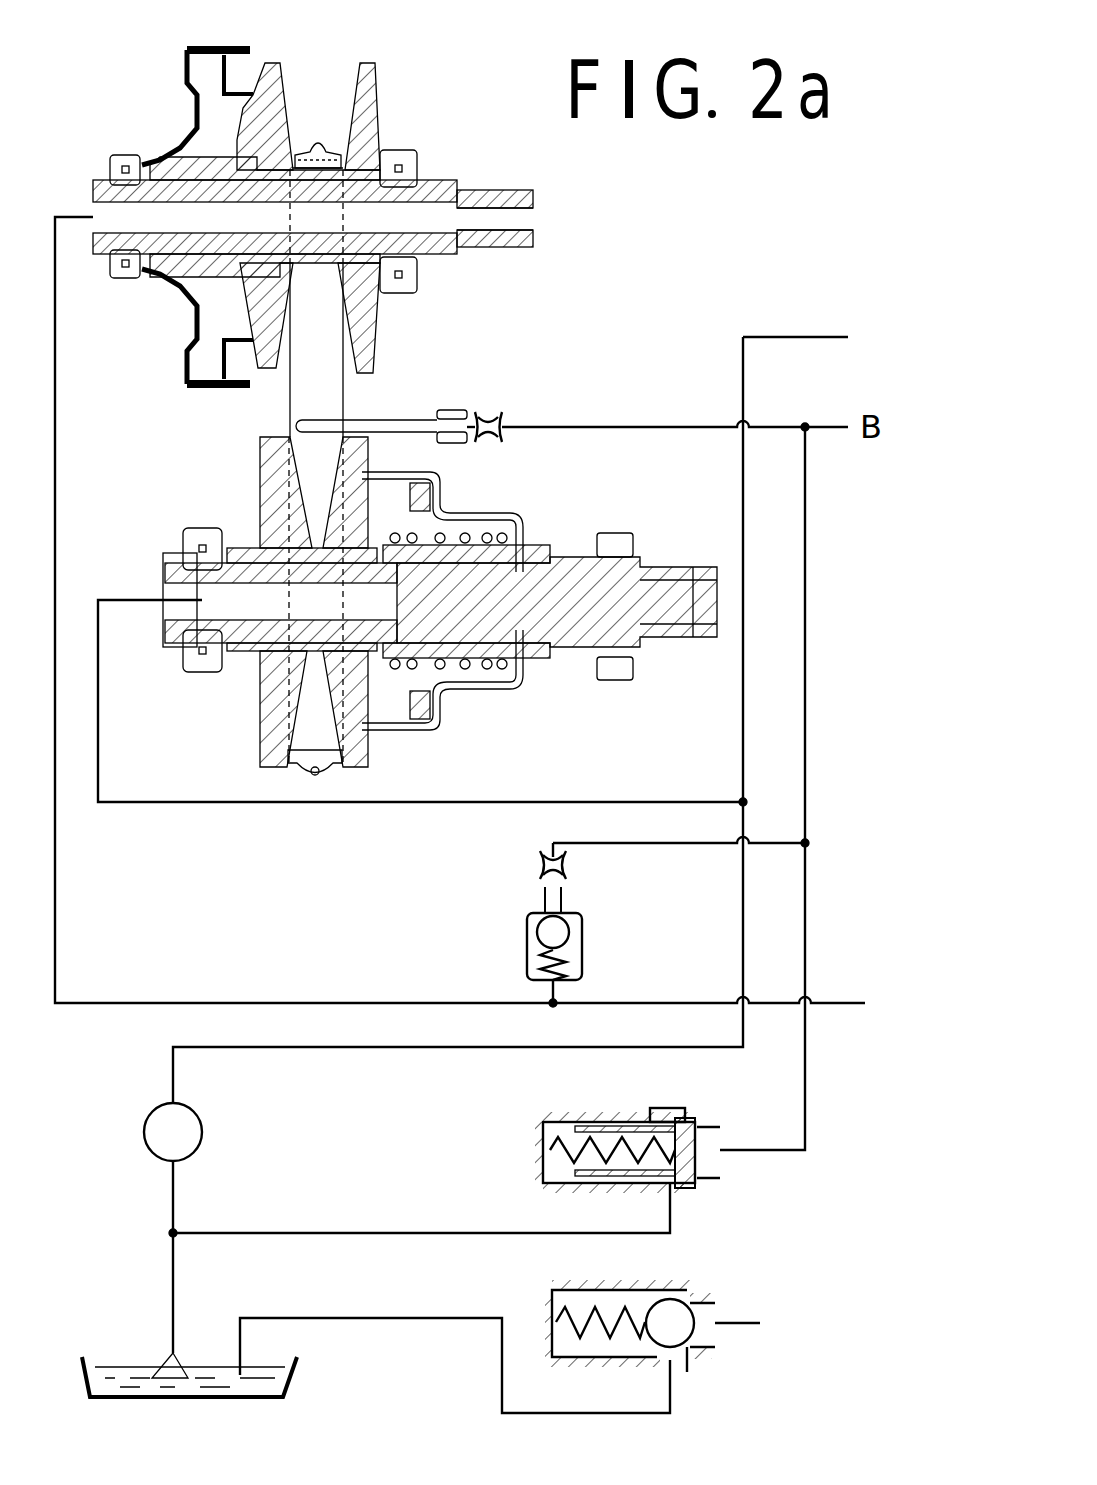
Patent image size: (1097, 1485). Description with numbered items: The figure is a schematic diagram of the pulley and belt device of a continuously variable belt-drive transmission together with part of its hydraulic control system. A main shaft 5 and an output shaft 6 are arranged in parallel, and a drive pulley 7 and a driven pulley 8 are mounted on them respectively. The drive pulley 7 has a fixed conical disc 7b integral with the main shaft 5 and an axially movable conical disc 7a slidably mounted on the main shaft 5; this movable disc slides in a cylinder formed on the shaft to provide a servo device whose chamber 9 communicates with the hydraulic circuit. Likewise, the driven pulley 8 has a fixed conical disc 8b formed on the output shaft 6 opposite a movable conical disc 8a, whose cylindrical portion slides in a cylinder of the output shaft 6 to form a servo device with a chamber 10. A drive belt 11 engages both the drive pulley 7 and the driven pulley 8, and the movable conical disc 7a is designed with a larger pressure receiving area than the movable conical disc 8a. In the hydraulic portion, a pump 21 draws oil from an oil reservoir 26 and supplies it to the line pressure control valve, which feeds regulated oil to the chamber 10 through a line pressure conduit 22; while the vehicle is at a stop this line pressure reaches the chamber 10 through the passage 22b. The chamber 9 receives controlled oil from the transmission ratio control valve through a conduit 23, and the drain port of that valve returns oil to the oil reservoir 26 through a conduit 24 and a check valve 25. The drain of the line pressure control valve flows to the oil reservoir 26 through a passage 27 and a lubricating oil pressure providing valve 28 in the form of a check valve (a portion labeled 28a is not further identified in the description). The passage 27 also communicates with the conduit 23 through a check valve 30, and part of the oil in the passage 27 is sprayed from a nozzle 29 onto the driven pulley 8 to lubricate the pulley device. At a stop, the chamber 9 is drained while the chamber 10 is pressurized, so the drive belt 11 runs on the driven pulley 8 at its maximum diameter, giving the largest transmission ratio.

The main shaft 5 is at (443, 182).
The output shaft 6 is at (627, 590).
The drive pulley 7 is at (301, 220).
The movable conical disc 7a is at (277, 67).
The fixed conical disc 7b is at (377, 120).
The driven pulley 8 is at (288, 615).
The movable conical disc 8a is at (357, 750).
The fixed conical disc 8b is at (277, 708).
The chamber 9 is at (190, 110).
The chamber 10 is at (468, 697).
The drive belt 11 is at (327, 137).
The pump 21 is at (202, 1142).
The line pressure conduit 22 is at (752, 337).
The passage 22b is at (621, 789).
The conduit 23 is at (820, 1003).
The conduit 24 is at (730, 1320).
The check valve 25 is at (671, 1306).
The oil reservoir 26 is at (290, 1390).
The passage 27 is at (808, 1100).
The lubricating oil pressure providing valve 28 is at (664, 1135).
The valve spool 28a is at (700, 1160).
The nozzle 29 is at (388, 412).
The check valve 30 is at (582, 967).